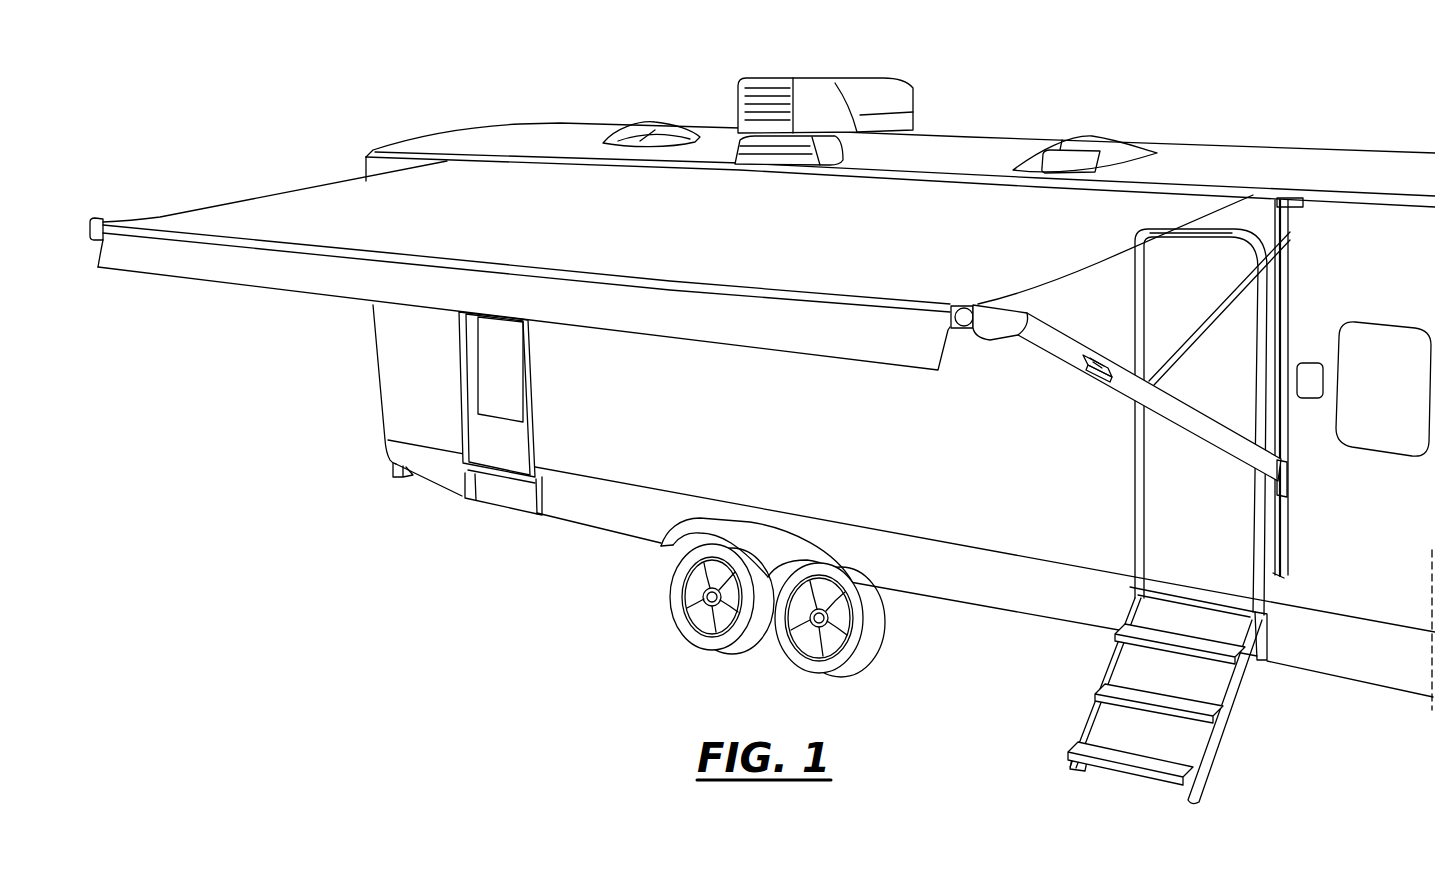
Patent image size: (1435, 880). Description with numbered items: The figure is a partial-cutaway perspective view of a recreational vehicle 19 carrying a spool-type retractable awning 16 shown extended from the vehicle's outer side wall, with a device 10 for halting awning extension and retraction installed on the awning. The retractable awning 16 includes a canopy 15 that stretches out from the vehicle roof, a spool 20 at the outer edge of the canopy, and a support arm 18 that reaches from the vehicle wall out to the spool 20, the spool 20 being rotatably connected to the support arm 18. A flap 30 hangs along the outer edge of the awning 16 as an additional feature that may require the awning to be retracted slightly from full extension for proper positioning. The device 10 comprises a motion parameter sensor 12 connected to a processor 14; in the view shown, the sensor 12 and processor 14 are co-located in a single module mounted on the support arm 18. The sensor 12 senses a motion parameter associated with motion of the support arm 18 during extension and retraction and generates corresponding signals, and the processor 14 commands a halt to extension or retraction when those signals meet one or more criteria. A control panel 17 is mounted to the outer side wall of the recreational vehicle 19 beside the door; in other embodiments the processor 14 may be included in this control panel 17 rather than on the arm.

The device for halting extension of a retractable awning 10 is at (1069, 392).
The motion parameter sensor 12 is at (1083, 368).
The processor 14 is at (1098, 375).
The canopy 15 is at (878, 250).
The retractable awning 16 is at (688, 300).
The control panel 17 is at (1313, 380).
The support arm 18 is at (1143, 390).
The recreational vehicle 19 is at (900, 413).
The spool 20 is at (965, 328).
The flap 30 is at (178, 260).